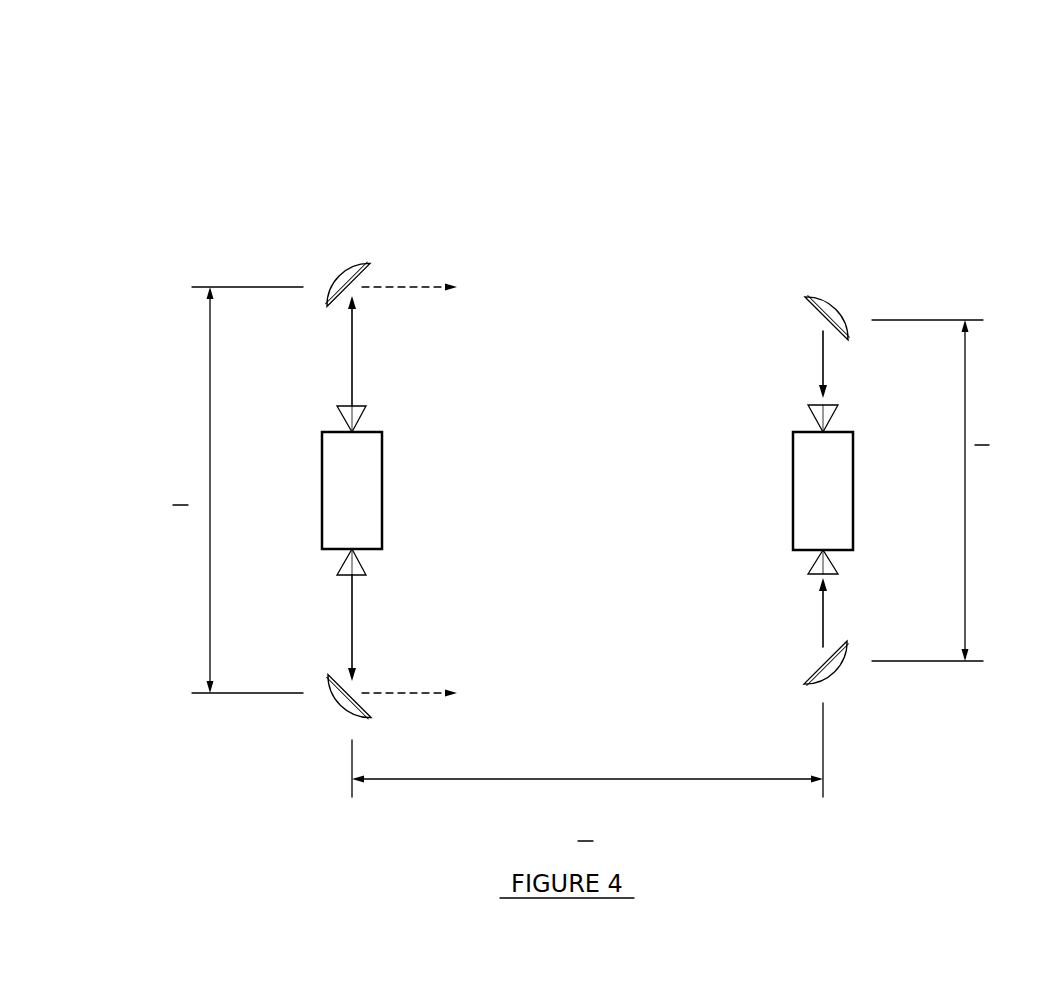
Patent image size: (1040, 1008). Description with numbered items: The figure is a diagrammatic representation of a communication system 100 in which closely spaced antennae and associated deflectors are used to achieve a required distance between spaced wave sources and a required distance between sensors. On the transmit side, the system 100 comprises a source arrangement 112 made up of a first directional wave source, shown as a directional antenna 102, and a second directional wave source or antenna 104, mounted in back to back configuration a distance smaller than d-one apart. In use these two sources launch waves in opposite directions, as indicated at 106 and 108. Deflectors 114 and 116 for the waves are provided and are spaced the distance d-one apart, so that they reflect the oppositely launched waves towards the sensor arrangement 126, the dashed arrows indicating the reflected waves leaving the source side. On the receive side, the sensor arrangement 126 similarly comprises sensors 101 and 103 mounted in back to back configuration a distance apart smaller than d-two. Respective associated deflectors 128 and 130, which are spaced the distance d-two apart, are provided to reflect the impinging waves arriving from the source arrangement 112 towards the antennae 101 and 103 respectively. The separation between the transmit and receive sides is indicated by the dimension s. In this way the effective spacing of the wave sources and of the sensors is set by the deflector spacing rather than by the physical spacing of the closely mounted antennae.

The system 100 is at (585, 127).
The source arrangement 112 is at (378, 217).
The sensor arrangement 126 is at (772, 248).
The directional antenna 102 is at (358, 421).
The second directional wave source or antenna 104 is at (357, 558).
The wave direction 106 is at (352, 383).
The wave direction 108 is at (352, 650).
The deflector 114 is at (345, 277).
The deflector 116 is at (347, 707).
The sensor 101 is at (815, 420).
The sensor 103 is at (813, 562).
The deflector 128 is at (823, 303).
The deflector 130 is at (833, 668).